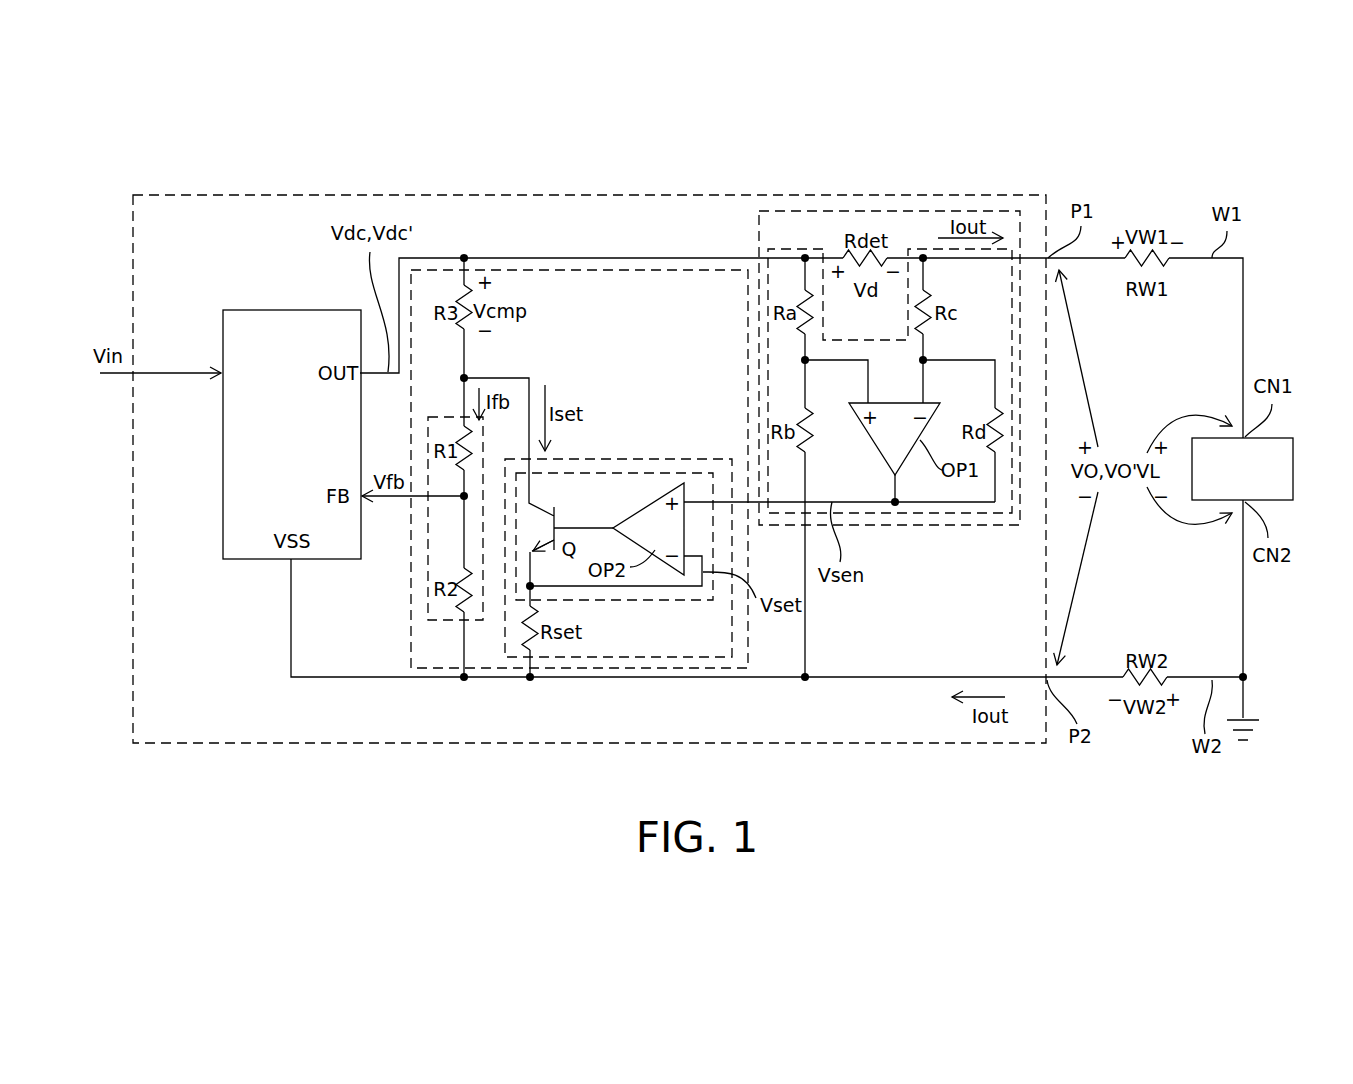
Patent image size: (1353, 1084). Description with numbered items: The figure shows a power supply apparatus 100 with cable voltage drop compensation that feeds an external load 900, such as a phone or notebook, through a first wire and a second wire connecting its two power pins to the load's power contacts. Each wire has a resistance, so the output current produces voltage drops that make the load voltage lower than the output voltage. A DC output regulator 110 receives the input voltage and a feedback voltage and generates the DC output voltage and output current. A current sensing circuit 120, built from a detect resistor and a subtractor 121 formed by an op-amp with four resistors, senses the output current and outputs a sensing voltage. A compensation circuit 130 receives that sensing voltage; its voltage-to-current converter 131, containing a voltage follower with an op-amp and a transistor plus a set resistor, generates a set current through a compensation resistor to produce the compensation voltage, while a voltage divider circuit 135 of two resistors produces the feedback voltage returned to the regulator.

The power supply apparatus 100 is at (1005, 743).
The DC output regulator 110 is at (292, 310).
The current sensing circuit 120 is at (863, 211).
The subtractor 121 is at (797, 249).
The compensation circuit 130 is at (515, 270).
The voltage-to-current converter 131 is at (580, 657).
The voltage divider circuit 135 is at (452, 620).
The external load 900 is at (1266, 438).